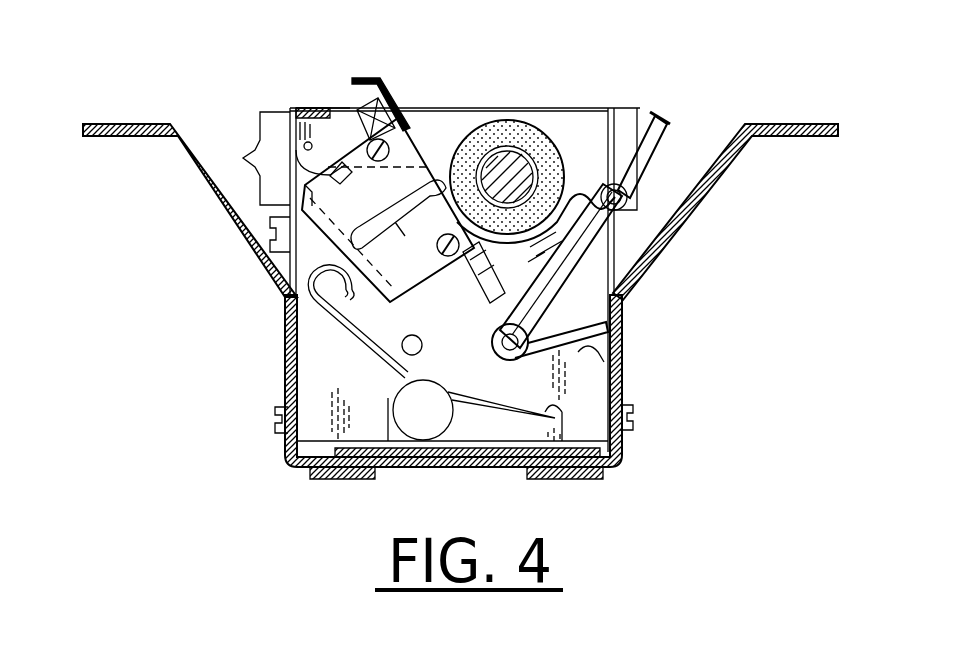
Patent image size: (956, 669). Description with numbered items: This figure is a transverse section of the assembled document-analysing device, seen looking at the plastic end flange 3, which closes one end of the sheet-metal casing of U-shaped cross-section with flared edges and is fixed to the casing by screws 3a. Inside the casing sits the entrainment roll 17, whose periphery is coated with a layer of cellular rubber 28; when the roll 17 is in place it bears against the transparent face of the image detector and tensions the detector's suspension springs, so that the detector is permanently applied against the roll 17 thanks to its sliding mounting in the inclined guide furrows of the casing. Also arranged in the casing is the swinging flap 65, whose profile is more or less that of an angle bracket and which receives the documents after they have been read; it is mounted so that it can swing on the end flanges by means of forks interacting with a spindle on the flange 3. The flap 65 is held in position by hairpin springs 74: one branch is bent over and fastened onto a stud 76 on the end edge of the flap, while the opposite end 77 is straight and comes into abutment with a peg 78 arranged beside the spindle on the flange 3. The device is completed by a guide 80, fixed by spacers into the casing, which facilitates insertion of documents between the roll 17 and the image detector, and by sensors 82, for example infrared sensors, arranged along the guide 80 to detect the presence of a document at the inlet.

The flange 3 is at (435, 115).
The screws 3a is at (272, 428).
The entrainment roll 17 is at (522, 168).
The layer of cellular rubber 28 is at (492, 122).
The swinging flap 65 is at (667, 118).
The hairpin springs 74 is at (496, 330).
The stud 76 is at (633, 186).
The opposite end 77 is at (610, 328).
The peg 78 is at (612, 360).
The guide 80 is at (378, 80).
The sensors 82 is at (345, 110).